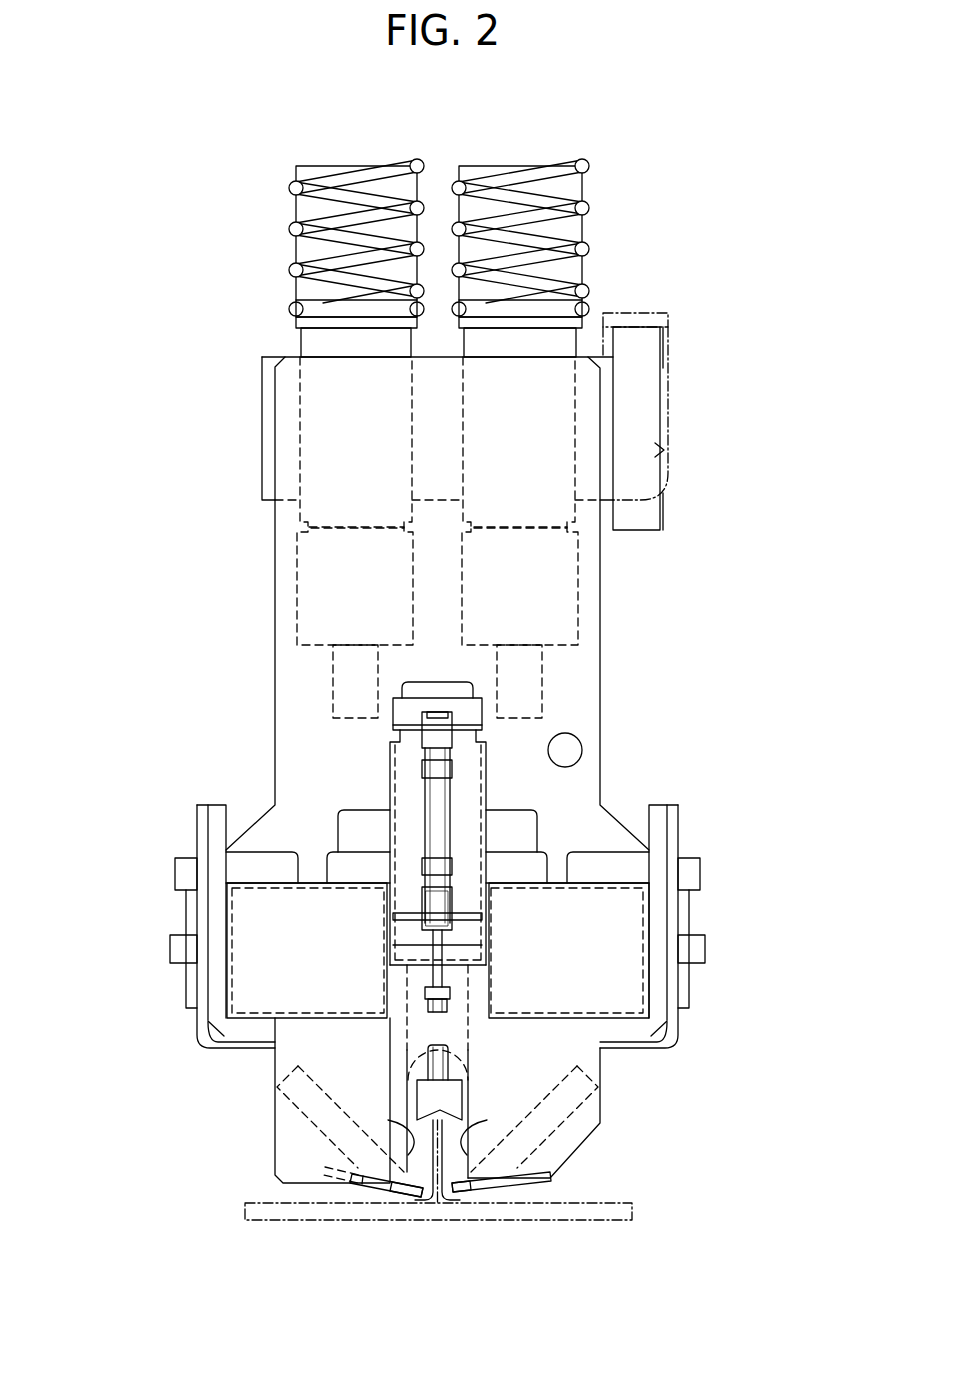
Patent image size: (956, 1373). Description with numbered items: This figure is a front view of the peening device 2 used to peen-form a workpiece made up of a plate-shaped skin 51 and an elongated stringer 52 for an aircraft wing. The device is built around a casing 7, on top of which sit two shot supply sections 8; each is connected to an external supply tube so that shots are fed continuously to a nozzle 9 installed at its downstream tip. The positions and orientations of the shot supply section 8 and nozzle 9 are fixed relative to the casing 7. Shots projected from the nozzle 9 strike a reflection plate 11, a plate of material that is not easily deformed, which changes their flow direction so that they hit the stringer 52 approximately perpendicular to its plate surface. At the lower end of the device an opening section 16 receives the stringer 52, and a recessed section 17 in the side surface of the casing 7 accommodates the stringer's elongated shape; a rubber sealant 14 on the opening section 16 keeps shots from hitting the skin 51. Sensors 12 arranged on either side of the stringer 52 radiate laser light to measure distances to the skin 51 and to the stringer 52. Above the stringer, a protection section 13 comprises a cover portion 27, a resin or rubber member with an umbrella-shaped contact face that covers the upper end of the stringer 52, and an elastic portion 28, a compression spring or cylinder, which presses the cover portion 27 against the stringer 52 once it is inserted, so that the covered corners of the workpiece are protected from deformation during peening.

The peening device 2 is at (726, 226).
The casing 7 is at (600, 597).
The shot supply section 8 is at (296, 252).
The nozzle 9 is at (333, 683).
The reflection plate 11 is at (290, 1072).
The sensor 12 is at (253, 917).
The protection section 13 is at (468, 1087).
The sealant 14 is at (388, 1193).
The opening section 16 is at (467, 1160).
The recessed section 17 is at (398, 1117).
The cover portion 27 is at (417, 1075).
The elastic portion 28 is at (450, 787).
The skin 51 is at (567, 1220).
The stringer 52 is at (442, 1137).